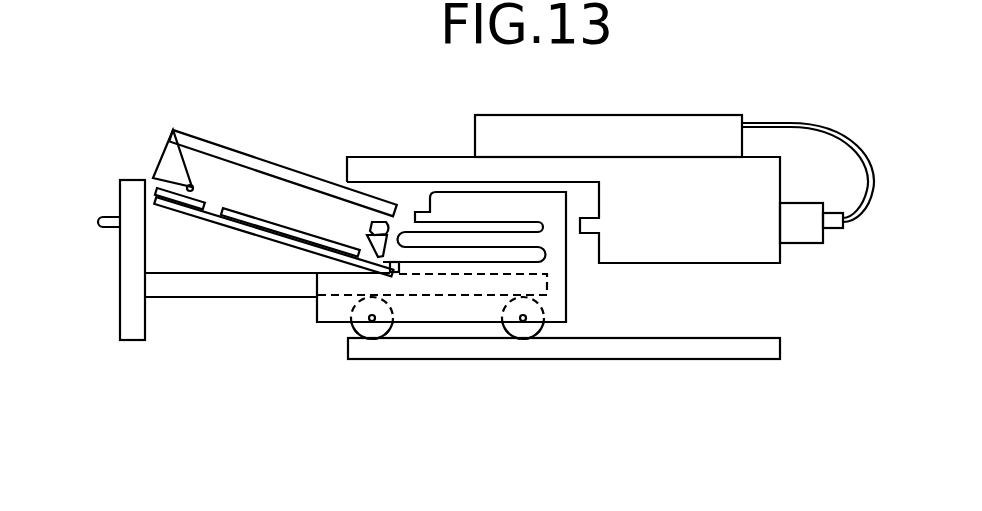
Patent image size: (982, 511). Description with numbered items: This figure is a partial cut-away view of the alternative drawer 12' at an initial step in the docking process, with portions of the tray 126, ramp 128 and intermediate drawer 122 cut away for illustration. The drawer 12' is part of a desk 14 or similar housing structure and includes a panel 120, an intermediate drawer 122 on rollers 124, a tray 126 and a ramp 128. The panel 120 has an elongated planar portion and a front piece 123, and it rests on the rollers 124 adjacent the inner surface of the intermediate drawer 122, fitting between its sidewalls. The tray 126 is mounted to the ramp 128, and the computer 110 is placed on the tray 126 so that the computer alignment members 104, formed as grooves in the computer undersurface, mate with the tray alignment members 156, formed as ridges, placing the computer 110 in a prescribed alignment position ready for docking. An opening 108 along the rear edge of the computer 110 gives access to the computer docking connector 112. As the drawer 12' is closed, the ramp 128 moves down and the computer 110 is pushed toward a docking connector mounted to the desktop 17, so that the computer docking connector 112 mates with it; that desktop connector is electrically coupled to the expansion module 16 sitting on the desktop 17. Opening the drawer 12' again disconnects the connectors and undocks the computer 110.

The drawer 12' is at (221, 214).
The desk 14 is at (703, 338).
The expansion module 16 is at (593, 116).
The desktop 17 is at (392, 157).
The alignment structures 104 is at (188, 189).
The opening 108 is at (368, 230).
The computer 110 is at (205, 140).
The docking connector 112 is at (370, 221).
The panel 120 is at (185, 298).
The intermediate drawer 122 is at (313, 305).
The front piece 123 is at (118, 274).
The rollers 124 is at (350, 320).
The tray 126 is at (155, 177).
The ramp 128 is at (186, 210).
The computer alignment structures 156 is at (190, 186).